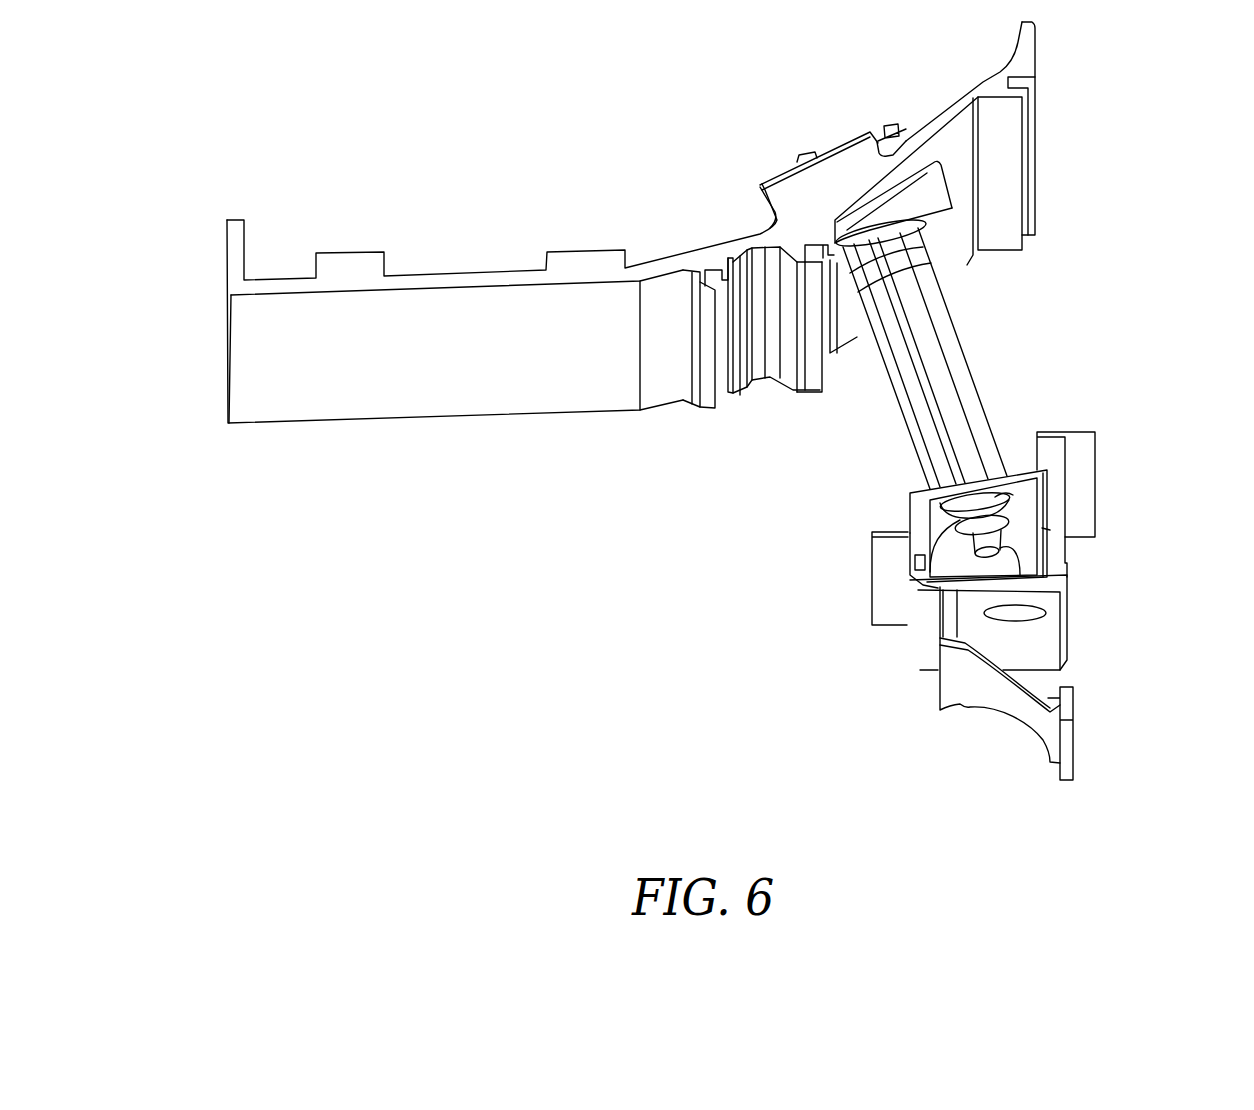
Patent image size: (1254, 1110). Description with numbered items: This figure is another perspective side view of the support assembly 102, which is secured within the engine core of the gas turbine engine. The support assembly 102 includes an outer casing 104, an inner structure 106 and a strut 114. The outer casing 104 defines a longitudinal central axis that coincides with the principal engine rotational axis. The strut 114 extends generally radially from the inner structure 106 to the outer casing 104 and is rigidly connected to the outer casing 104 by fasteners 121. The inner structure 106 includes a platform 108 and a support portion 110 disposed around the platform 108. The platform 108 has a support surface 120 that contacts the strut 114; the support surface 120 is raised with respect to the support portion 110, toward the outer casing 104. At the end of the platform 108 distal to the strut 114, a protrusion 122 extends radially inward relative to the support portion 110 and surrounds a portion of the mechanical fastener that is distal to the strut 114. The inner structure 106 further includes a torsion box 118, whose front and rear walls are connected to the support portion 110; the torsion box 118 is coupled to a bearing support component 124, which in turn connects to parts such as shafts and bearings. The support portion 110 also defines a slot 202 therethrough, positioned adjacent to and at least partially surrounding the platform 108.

The support assembly 102 is at (272, 131).
The outer casing 104 is at (950, 108).
The inner structure 106 is at (795, 538).
The platform 108 is at (1028, 502).
The support portion 110 is at (928, 491).
The strut 114 is at (968, 376).
The torsion box 118 is at (1062, 677).
The support surface 120 is at (1000, 467).
The fasteners 121 is at (888, 128).
The protrusion 122 is at (950, 520).
The bearing support component 124 is at (1073, 754).
The slot 202 is at (1032, 518).